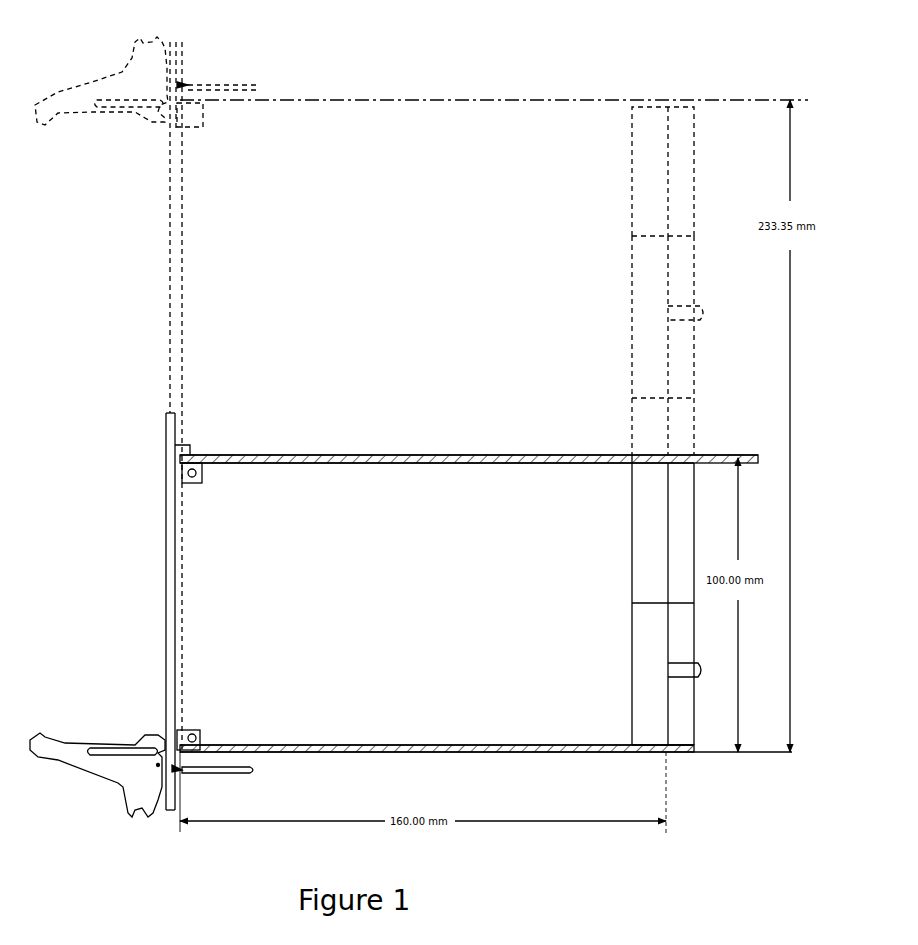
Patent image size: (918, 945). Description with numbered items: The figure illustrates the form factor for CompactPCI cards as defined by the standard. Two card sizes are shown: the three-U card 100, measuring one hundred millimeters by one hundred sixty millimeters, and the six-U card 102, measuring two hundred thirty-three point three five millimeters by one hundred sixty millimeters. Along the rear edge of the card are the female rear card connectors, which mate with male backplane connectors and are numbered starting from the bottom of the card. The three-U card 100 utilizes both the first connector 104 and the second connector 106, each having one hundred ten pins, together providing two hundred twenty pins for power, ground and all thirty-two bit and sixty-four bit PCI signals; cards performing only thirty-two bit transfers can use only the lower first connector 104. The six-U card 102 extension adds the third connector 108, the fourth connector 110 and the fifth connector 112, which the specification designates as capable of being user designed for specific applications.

The 3U card 100 is at (165, 613).
The 6U card 102 is at (497, 100).
The J1 connector 104 is at (694, 648).
The J2 connector 106 is at (694, 535).
The J3 connector 108 is at (696, 434).
The J4 connector 110 is at (696, 360).
The J5 connector 112 is at (696, 178).